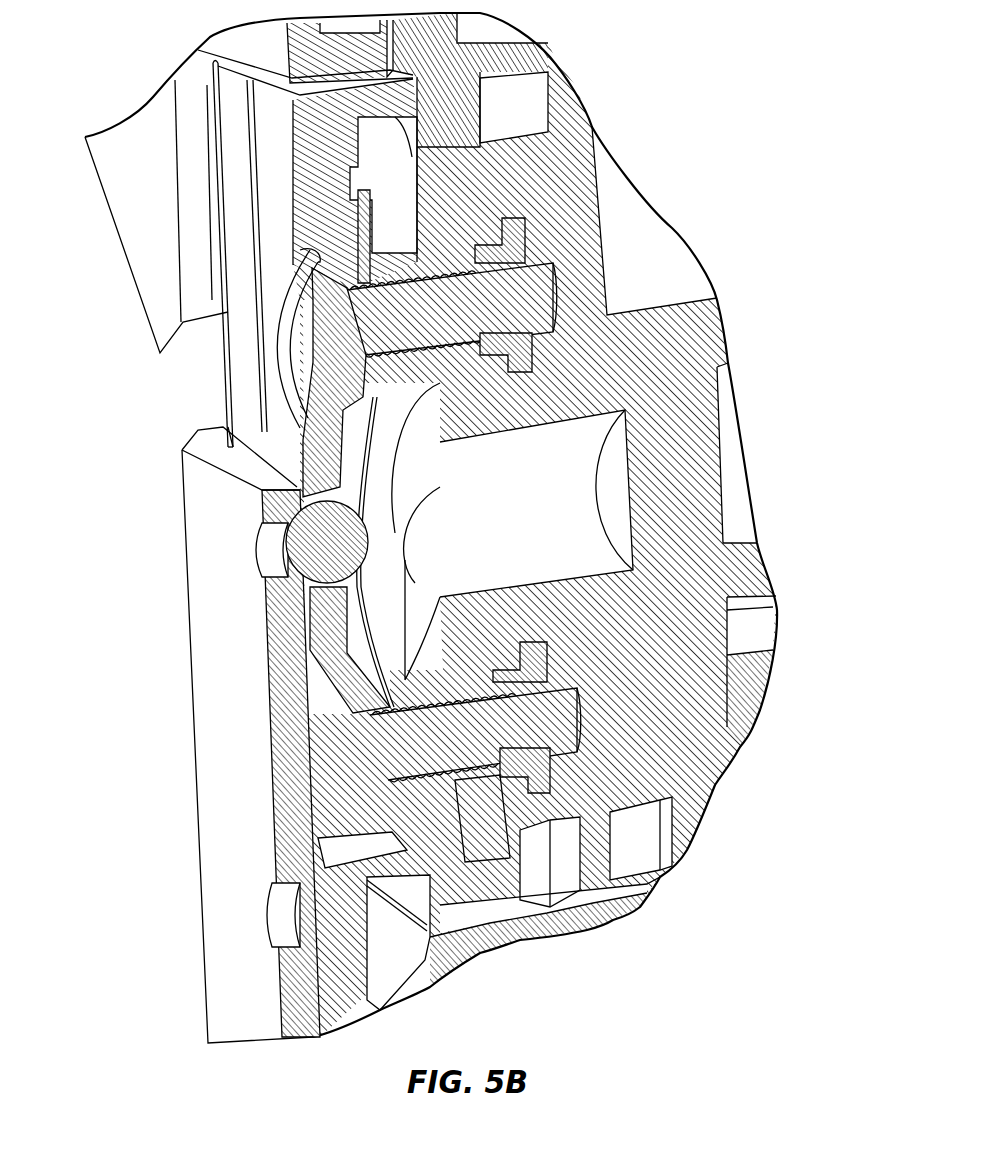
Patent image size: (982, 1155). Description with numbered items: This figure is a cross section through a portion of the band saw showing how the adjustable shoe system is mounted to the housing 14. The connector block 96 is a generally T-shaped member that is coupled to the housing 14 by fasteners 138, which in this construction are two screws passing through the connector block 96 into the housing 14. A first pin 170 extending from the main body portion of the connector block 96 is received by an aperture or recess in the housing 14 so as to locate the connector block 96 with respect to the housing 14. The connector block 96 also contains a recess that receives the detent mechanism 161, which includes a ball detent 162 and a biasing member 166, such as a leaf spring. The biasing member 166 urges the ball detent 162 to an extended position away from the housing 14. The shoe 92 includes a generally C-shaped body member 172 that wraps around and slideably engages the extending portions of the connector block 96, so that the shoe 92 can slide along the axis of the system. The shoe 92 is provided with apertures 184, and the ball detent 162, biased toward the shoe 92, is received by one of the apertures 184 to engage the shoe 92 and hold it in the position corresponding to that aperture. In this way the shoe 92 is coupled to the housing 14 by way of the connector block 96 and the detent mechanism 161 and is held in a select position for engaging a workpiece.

The housing 14 is at (655, 767).
The shoe 92 is at (190, 676).
The connector block 96 is at (247, 407).
The fasteners 138 is at (313, 370).
The detent mechanism 161 is at (378, 573).
The ball detent 162 is at (307, 543).
The biasing member 166 is at (398, 480).
The first pin 170 is at (478, 857).
The body member 172 is at (200, 490).
The apertures 184 is at (262, 560).